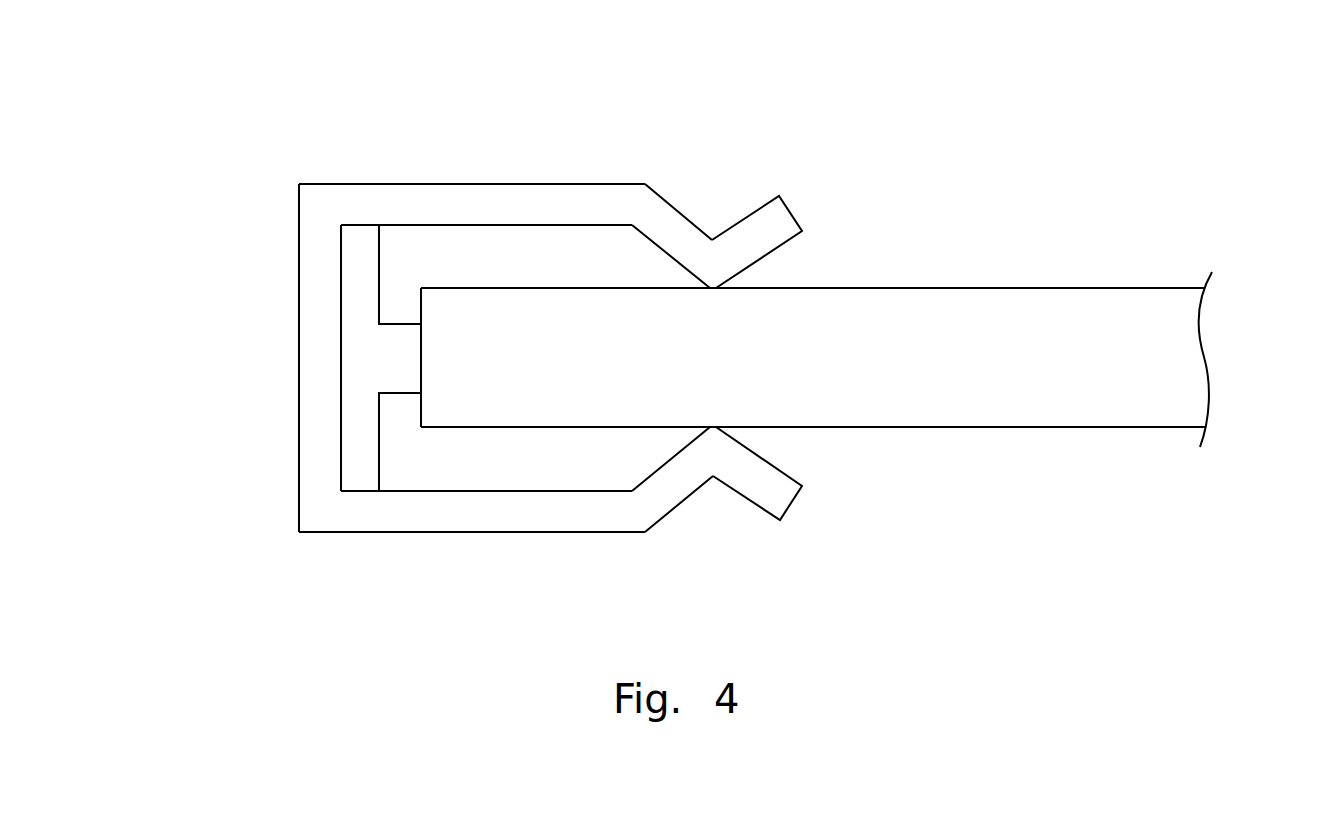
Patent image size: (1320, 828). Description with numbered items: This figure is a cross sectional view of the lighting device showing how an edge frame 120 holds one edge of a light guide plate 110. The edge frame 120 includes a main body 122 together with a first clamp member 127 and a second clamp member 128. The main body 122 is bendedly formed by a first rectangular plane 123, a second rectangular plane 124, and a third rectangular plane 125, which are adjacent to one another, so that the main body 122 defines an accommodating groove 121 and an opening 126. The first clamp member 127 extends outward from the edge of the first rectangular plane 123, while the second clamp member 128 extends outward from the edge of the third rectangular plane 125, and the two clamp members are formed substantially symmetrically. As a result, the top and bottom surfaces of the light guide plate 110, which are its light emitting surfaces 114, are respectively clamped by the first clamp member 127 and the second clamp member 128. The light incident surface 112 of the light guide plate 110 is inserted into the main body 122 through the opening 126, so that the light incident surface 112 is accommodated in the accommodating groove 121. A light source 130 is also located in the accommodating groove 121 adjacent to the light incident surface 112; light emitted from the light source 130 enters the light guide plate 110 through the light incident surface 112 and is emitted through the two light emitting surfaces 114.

The light guide plate 110 is at (865, 375).
The light incident surface 112 is at (428, 365).
The light emitting surfaces 114 is at (1038, 415).
The edge frame 120 is at (330, 138).
The accommodating groove 121 is at (523, 248).
The main body 122 is at (168, 290).
The first rectangular plane 123 is at (408, 203).
The second rectangular plane 124 is at (310, 366).
The third rectangular plane 125 is at (387, 515).
The opening 126 is at (824, 373).
The first clamp member 127 is at (737, 245).
The second clamp member 128 is at (733, 473).
The light source 130 is at (403, 343).